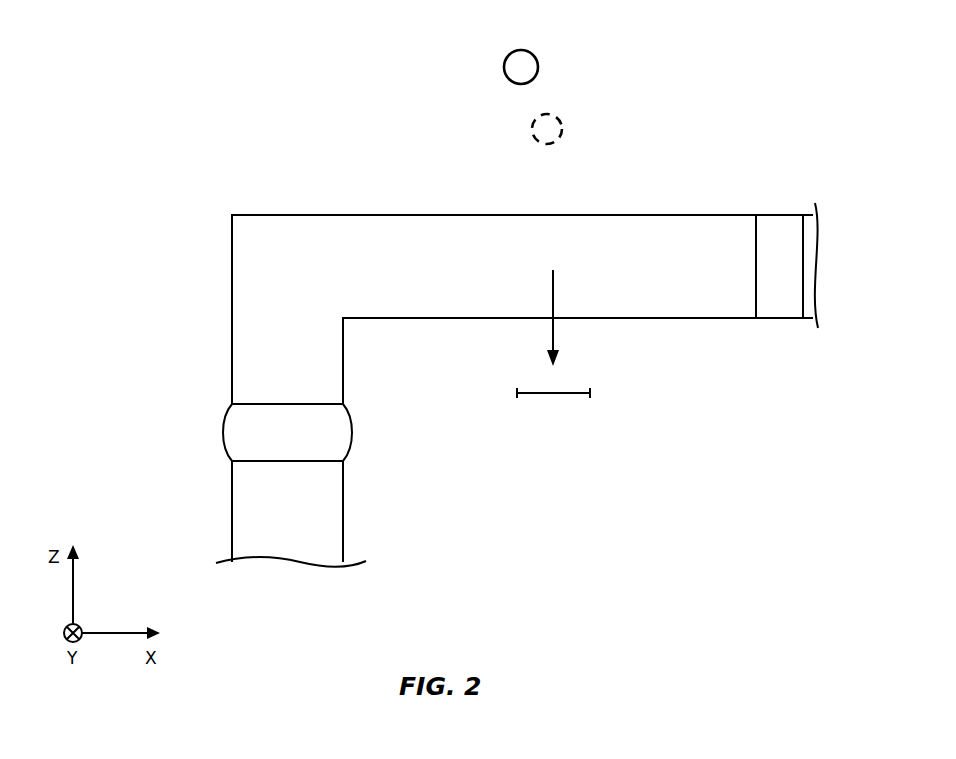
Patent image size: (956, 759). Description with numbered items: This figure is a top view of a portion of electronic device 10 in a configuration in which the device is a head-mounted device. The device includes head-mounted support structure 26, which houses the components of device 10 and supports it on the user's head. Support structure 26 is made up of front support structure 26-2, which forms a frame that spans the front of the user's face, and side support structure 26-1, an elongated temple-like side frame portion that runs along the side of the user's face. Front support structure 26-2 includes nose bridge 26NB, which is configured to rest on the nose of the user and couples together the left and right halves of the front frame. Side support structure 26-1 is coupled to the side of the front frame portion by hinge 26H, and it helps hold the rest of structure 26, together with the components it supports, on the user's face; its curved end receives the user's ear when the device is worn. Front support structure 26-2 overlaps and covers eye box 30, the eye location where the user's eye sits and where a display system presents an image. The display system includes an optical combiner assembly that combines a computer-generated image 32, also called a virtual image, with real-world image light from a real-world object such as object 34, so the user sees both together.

The electronic device 10 is at (278, 90).
The head-mounted support structure 26 is at (152, 216).
The side support structure 26-1 is at (245, 513).
The front support structure 26-2 is at (245, 314).
The hinge 26H is at (245, 433).
The nose bridge 26NB is at (780, 233).
The eye box 30 is at (592, 393).
The computer-generated image 32 is at (563, 131).
The object 34 is at (539, 66).